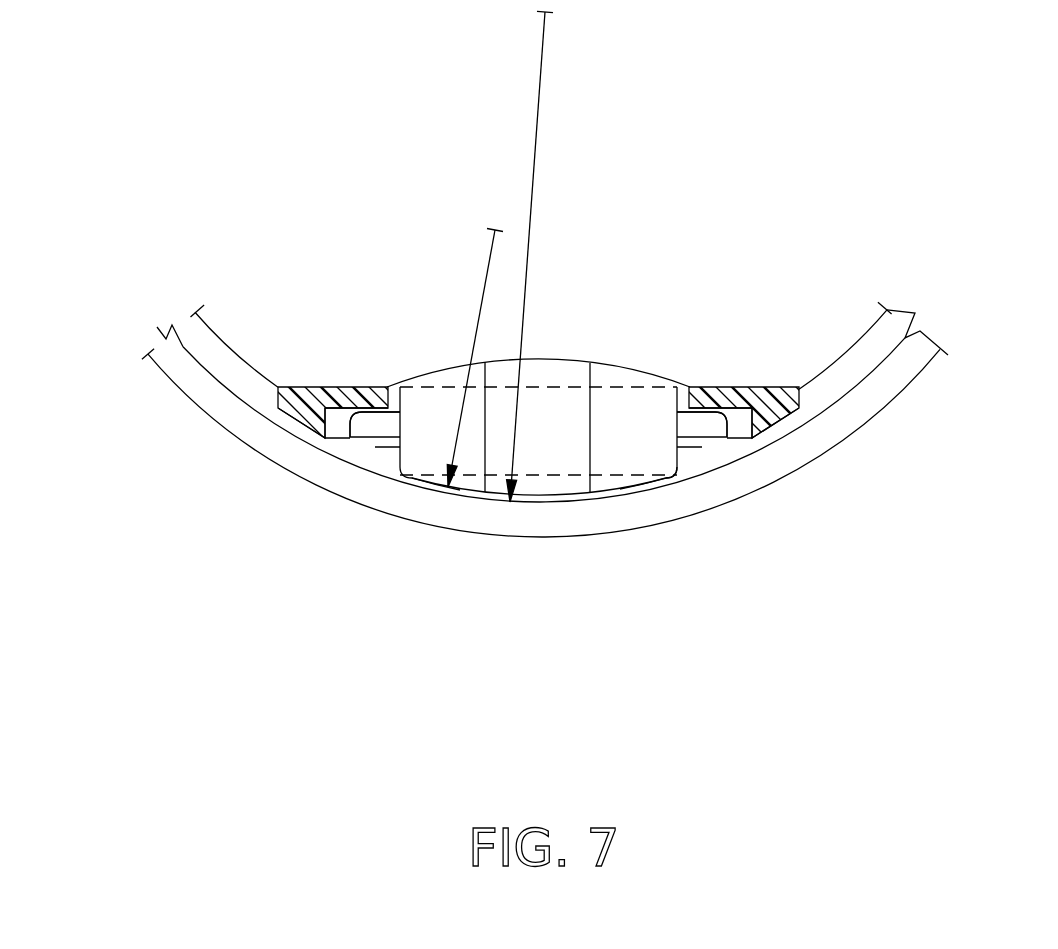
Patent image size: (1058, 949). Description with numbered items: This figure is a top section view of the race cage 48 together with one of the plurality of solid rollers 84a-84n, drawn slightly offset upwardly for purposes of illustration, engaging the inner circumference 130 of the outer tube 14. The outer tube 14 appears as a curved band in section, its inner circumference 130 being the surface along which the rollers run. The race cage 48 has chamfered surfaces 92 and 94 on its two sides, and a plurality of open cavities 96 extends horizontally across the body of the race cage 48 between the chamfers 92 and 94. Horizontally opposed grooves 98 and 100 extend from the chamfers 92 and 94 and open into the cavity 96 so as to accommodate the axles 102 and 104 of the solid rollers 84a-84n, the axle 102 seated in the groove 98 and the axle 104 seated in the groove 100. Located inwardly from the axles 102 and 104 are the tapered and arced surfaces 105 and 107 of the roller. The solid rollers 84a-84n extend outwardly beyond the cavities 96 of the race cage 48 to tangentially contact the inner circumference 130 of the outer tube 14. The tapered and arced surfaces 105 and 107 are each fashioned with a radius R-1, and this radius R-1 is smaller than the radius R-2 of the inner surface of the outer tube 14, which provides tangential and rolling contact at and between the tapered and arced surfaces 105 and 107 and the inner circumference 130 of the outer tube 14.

The outer tube 14 is at (793, 480).
The inner circumference 130 is at (479, 420).
The race cage 48 is at (518, 352).
The chamfered surface 92 is at (248, 454).
The chamfered surface 94 is at (826, 451).
The groove 98 is at (370, 388).
The groove 100 is at (690, 385).
The axle 102 is at (309, 479).
The axle 104 is at (786, 514).
The solid rollers 84a-84n is at (570, 358).
The tapered and arced surface 105 is at (400, 512).
The tapered and arced surface 107 is at (636, 523).
The open cavity 96 is at (758, 557).
The radius of tapered and arced surfaces R-1 is at (486, 303).
The radius of inner surface of outer tube R-2 is at (533, 162).